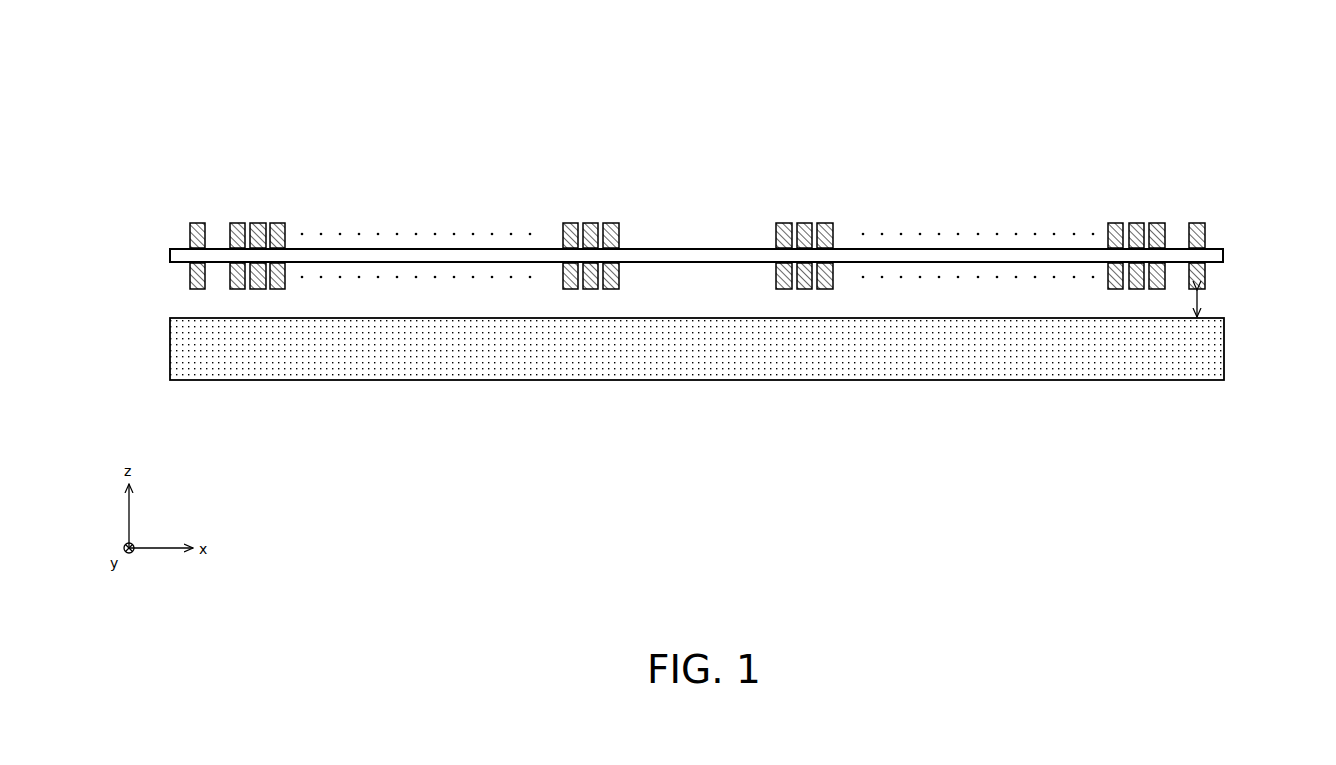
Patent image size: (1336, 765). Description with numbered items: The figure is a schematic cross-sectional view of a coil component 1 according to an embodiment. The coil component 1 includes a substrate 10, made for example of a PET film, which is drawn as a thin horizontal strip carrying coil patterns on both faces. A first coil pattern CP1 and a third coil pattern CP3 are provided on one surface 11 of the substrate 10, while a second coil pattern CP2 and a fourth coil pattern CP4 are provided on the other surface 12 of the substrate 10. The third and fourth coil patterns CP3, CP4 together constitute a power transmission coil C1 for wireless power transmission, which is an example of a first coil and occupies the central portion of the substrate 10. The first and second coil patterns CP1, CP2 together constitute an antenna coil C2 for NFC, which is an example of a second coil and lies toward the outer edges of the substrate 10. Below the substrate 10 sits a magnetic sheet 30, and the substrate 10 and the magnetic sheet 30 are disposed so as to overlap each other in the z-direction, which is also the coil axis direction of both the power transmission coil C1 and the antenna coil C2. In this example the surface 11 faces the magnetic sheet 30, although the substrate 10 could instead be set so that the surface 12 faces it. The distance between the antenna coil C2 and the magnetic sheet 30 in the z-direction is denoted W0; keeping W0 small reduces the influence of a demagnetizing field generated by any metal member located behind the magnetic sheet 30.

The coil component 1 is at (1113, 83).
The substrate 10 is at (1223, 255).
The one surface of the substrate 11 is at (712, 262).
The other surface of the substrate 12 is at (708, 248).
The magnetic sheet 30 is at (1224, 348).
The first coil pattern CP1 is at (190, 278).
The second coil pattern CP2 is at (190, 233).
The third coil pattern CP3 is at (907, 283).
The fourth coil pattern CP4 is at (967, 229).
The power transmission coil C1 is at (1068, 452).
The antenna coil C2 is at (72, 203).
The distance between the antenna coil and the magnetic sheet in the z-direction W0 is at (1192, 303).